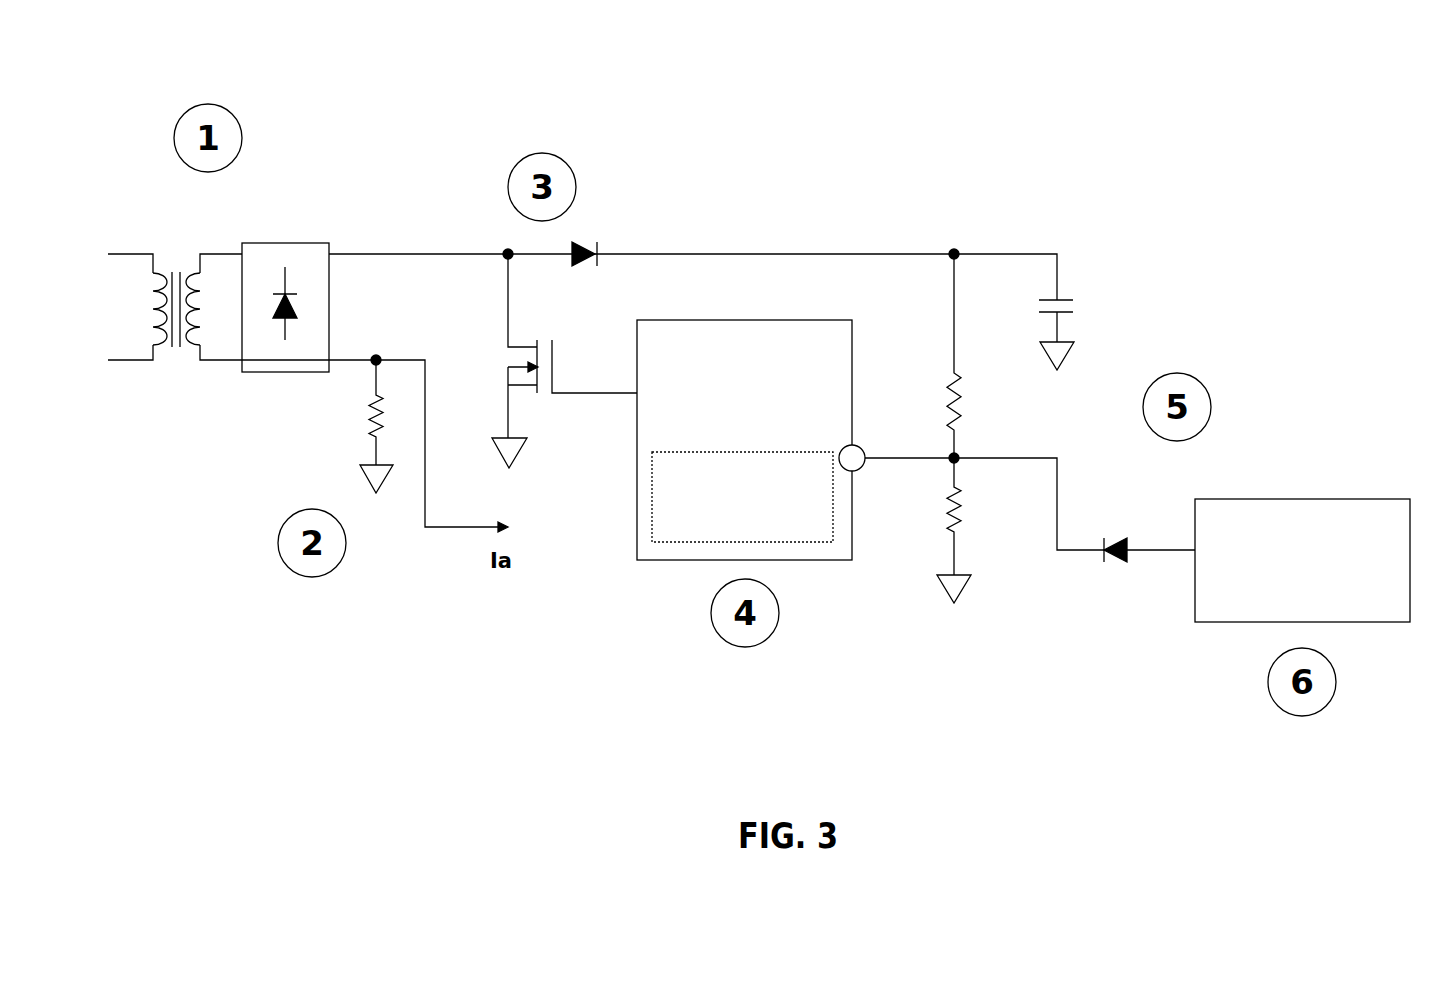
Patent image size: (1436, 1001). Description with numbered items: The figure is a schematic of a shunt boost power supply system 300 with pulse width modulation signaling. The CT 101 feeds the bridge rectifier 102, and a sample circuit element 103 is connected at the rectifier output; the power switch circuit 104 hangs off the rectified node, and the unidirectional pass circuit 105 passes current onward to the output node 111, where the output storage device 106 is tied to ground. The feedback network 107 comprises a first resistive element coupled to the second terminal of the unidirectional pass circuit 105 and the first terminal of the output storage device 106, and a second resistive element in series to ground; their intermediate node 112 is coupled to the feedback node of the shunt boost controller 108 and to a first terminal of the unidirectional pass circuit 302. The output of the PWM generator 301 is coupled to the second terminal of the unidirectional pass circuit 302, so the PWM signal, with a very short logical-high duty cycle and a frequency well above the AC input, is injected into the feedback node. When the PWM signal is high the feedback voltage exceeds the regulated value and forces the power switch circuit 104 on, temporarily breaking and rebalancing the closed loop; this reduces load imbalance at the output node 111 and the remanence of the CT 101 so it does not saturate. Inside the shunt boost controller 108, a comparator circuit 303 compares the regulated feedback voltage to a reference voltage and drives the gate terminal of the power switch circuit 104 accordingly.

The CT 101 is at (172, 347).
The bridge rectifier 102 is at (330, 245).
The sample circuit element 103 is at (368, 420).
The power switch circuit 104 is at (533, 343).
The unidirectional pass circuit 105 is at (595, 242).
The output storage device 106 is at (1072, 298).
The feedback network 107 is at (1062, 381).
The shunt boost controller 108 is at (770, 418).
The output node 111 is at (954, 254).
The intermediate node 112 is at (958, 462).
The shunt boost power supply system 300 is at (1107, 87).
The PWM generator 301 is at (1282, 499).
The unidirectional pass circuit 302 is at (1104, 538).
The comparator circuit 303 is at (725, 508).